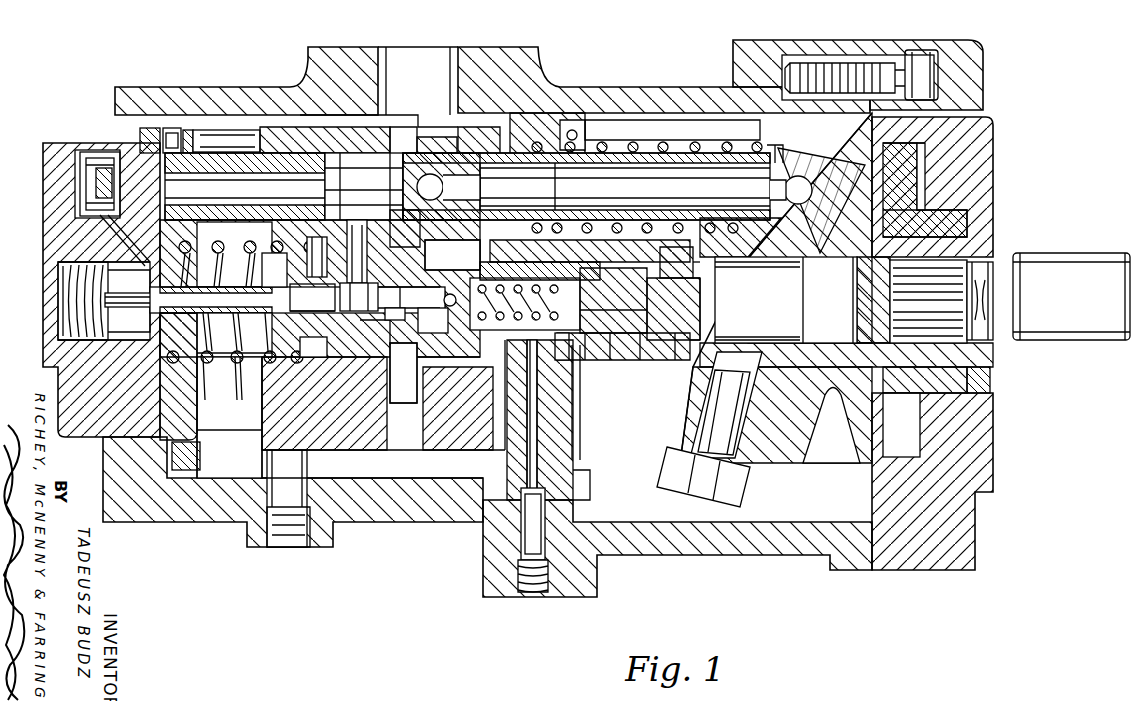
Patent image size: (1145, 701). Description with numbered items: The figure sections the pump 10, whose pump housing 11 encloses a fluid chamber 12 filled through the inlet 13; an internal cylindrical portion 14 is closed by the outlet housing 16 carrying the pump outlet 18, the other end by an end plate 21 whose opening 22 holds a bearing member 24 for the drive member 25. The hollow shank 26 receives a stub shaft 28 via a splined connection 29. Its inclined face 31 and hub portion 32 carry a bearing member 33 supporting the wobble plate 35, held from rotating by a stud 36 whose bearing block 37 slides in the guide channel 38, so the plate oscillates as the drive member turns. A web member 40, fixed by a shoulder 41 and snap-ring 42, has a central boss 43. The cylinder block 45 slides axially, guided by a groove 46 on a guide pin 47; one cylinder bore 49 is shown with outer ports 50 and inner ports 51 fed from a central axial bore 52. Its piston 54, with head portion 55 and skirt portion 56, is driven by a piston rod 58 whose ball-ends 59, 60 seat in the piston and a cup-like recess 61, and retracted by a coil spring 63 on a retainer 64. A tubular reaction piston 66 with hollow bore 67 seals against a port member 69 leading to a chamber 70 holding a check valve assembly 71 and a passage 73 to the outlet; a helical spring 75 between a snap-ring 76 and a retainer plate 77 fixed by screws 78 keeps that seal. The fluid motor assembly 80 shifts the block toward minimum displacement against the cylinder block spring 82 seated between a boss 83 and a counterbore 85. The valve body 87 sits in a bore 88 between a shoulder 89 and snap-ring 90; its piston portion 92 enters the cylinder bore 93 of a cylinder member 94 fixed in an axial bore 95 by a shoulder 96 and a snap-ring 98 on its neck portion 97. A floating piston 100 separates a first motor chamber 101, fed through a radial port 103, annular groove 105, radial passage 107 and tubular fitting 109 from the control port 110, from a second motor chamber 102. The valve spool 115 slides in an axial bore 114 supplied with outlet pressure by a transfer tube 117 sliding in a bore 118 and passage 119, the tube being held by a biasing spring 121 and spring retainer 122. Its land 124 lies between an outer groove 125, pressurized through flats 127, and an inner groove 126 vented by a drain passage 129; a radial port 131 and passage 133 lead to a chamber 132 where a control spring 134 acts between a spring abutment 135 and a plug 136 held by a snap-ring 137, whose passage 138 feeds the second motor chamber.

The pump 10 is at (637, 85).
The pump housing 11 is at (700, 555).
The fluid chamber 12 is at (623, 368).
The inlet 13 is at (470, 60).
The internal cylindrical portion 14 is at (227, 475).
The outlet housing 16 is at (95, 422).
The pump outlet 18 is at (57, 340).
The end plate 21 is at (983, 155).
The centrally located opening 22 is at (953, 395).
The bearing member 24 is at (947, 210).
The drive member 25 is at (853, 413).
The shank 26 is at (993, 360).
The stub shaft 28 is at (1100, 342).
The splined connection 29 is at (933, 330).
The inclined face 31 is at (822, 153).
The hub portion 32 is at (760, 357).
The bearing member 33 is at (818, 255).
The wobble plate 35 is at (805, 158).
The radially projecting stud 36 is at (707, 420).
The bearing block 37 is at (690, 487).
The guide channel 38 is at (803, 499).
The web member 40 is at (547, 423).
The shoulder 41 is at (520, 117).
The snap-ring 42 is at (582, 488).
The elongated boss 43 is at (690, 352).
The cylinder block 45 is at (380, 125).
The longitudinal groove 46 is at (383, 468).
The guide pin 47 is at (300, 468).
The cylinder bores 49 is at (343, 160).
The outer ports 50 is at (390, 160).
The inner ports 51 is at (337, 210).
The central axial bore 52 is at (405, 228).
The piston 54 is at (457, 157).
The head portion 55 is at (342, 192).
The skirt portion 56 is at (702, 238).
The piston rod 58 is at (540, 195).
The ball-end 59 is at (443, 190).
The ball-end 60 is at (785, 190).
The cup-like recess 61 is at (762, 178).
The coil spring 63 is at (640, 145).
The retainer 64 is at (756, 145).
The tubular reaction piston 66 is at (233, 155).
The hollow bore 67 is at (243, 203).
The hollow port member 69 is at (150, 155).
The chamber 70 is at (90, 157).
The check valve assembly 71 is at (113, 182).
The passage 73 is at (112, 237).
The helical spring 75 is at (193, 153).
The snap-ring 76 is at (167, 150).
The retainer plate 77 is at (203, 425).
The screws 78 is at (200, 452).
The fluid motor assembly 80 is at (698, 274).
The cylinder block spring 82 is at (232, 375).
The boss 83 is at (172, 368).
The enlarged counterbore 85 is at (255, 372).
The valve body 87 is at (292, 340).
The bore 88 is at (374, 350).
The shoulder 89 is at (403, 373).
The snap-ring 90 is at (300, 355).
The piston portion 92 is at (445, 253).
The cylinder bore 93 is at (590, 350).
The cylinder member 94 is at (465, 370).
The axial bore 95 is at (616, 352).
The shoulder 96 is at (682, 347).
The neck portion 97 is at (693, 310).
The snap-ring 98 is at (698, 258).
The floating piston 100 is at (613, 300).
The first motor chamber 101 is at (673, 309).
The second motor chamber 102 is at (572, 347).
The radial port 103 is at (650, 350).
The elongated annular groove 105 is at (613, 317).
The radial passage 107 is at (528, 437).
The tubular fitting 109 is at (522, 527).
The control port 110 is at (547, 592).
The axial bore 114 is at (338, 312).
The valve spool 115 is at (318, 286).
The transfer tube 117 is at (150, 312).
The bore 118 is at (152, 291).
The passage 119 is at (283, 278).
The biasing spring 121 is at (210, 356).
The spring retainer 122 is at (243, 280).
The land 124 is at (340, 345).
The outer annular groove 125 is at (330, 300).
The inner annular groove 126 is at (395, 330).
The flats 127 is at (313, 310).
The drain passage 129 is at (422, 332).
The radial port 131 is at (340, 262).
The cylindrical chamber 132 is at (440, 342).
The passage 133 is at (378, 262).
The control spring 134 is at (538, 262).
The spring abutment 135 is at (432, 272).
The plug 136 is at (565, 340).
The snap-ring 137 is at (582, 260).
The passage 138 is at (500, 302).